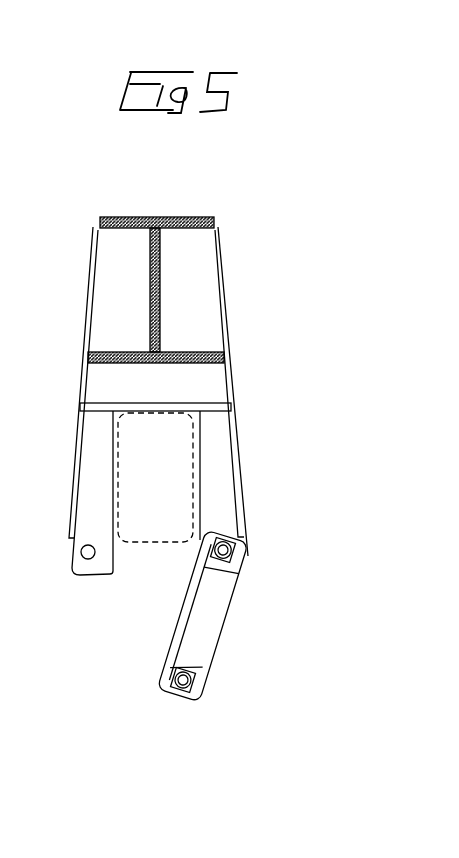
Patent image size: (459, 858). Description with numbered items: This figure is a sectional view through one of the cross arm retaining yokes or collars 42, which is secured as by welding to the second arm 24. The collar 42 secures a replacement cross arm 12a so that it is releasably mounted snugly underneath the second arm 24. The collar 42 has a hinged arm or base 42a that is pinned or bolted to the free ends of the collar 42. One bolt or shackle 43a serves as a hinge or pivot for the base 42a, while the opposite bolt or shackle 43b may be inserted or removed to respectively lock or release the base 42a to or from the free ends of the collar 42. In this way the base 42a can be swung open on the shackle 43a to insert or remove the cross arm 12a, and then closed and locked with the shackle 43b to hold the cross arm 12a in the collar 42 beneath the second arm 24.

The second arm 24 is at (190, 223).
The cross arm retaining collar 42 is at (250, 442).
The replacement cross arm 12a is at (178, 488).
The bolt or shackle 43a is at (243, 547).
The hinged arm or base 42a is at (203, 611).
The bolt or shackle 43b is at (210, 678).